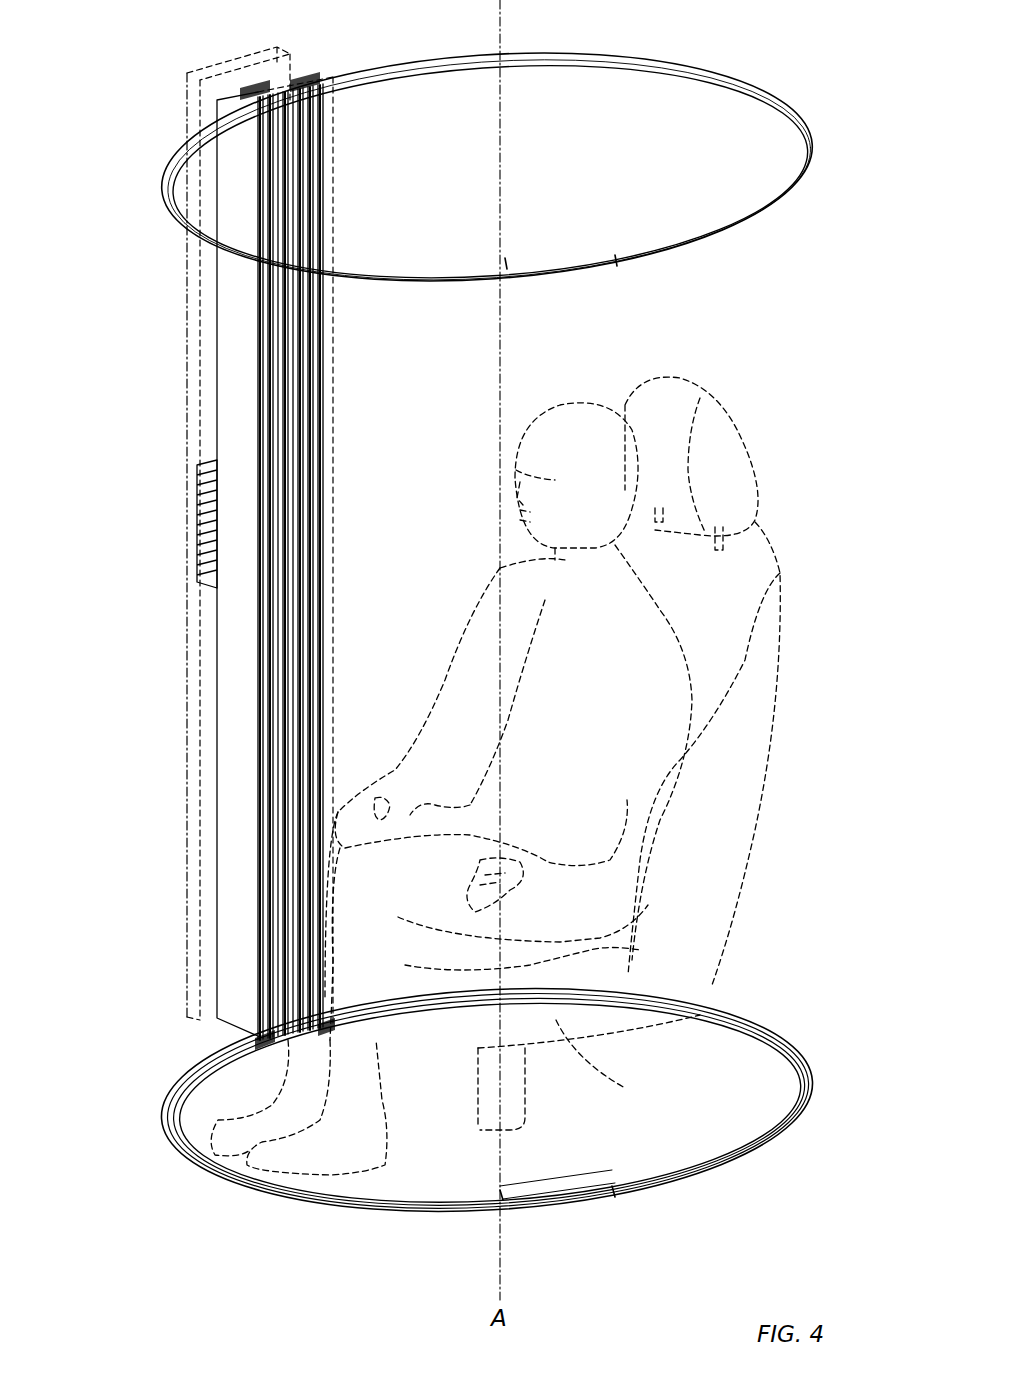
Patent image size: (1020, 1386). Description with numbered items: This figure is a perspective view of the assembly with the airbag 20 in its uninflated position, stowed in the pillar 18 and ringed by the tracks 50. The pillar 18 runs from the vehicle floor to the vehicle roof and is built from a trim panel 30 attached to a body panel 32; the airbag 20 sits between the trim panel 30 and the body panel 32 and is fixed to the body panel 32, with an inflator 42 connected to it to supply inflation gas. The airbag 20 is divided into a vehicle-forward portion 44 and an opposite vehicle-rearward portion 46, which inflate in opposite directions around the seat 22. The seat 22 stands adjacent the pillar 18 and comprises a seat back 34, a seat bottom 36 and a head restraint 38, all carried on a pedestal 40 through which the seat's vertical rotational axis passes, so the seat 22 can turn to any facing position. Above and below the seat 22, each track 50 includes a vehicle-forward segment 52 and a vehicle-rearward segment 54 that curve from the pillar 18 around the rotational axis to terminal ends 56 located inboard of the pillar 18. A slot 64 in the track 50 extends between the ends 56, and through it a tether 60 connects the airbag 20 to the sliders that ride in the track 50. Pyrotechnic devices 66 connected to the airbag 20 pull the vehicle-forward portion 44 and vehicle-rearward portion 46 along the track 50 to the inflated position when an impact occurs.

The pillar 18 is at (183, 650).
The airbag 20 is at (253, 561).
The seat 22 is at (631, 755).
The trim panel 30 is at (335, 485).
The body panel 32 is at (185, 393).
The seat back 34 is at (770, 700).
The seat bottom 36 is at (598, 1082).
The head restraint 38 is at (728, 468).
The pedestal 40 is at (468, 1108).
The inflator 42 is at (207, 525).
The vehicle-forward portion 44 is at (237, 293).
The vehicle-rearward portion 46 is at (315, 230).
The track 50 is at (476, 646).
The vehicle-forward segment 52 is at (152, 203).
The vehicle-rearward segment 54 is at (476, 633).
The ends 56 is at (505, 263).
The tether 60 is at (245, 100).
The slot 64 is at (178, 1097).
The pyrotechnic device 66 is at (500, 1190).